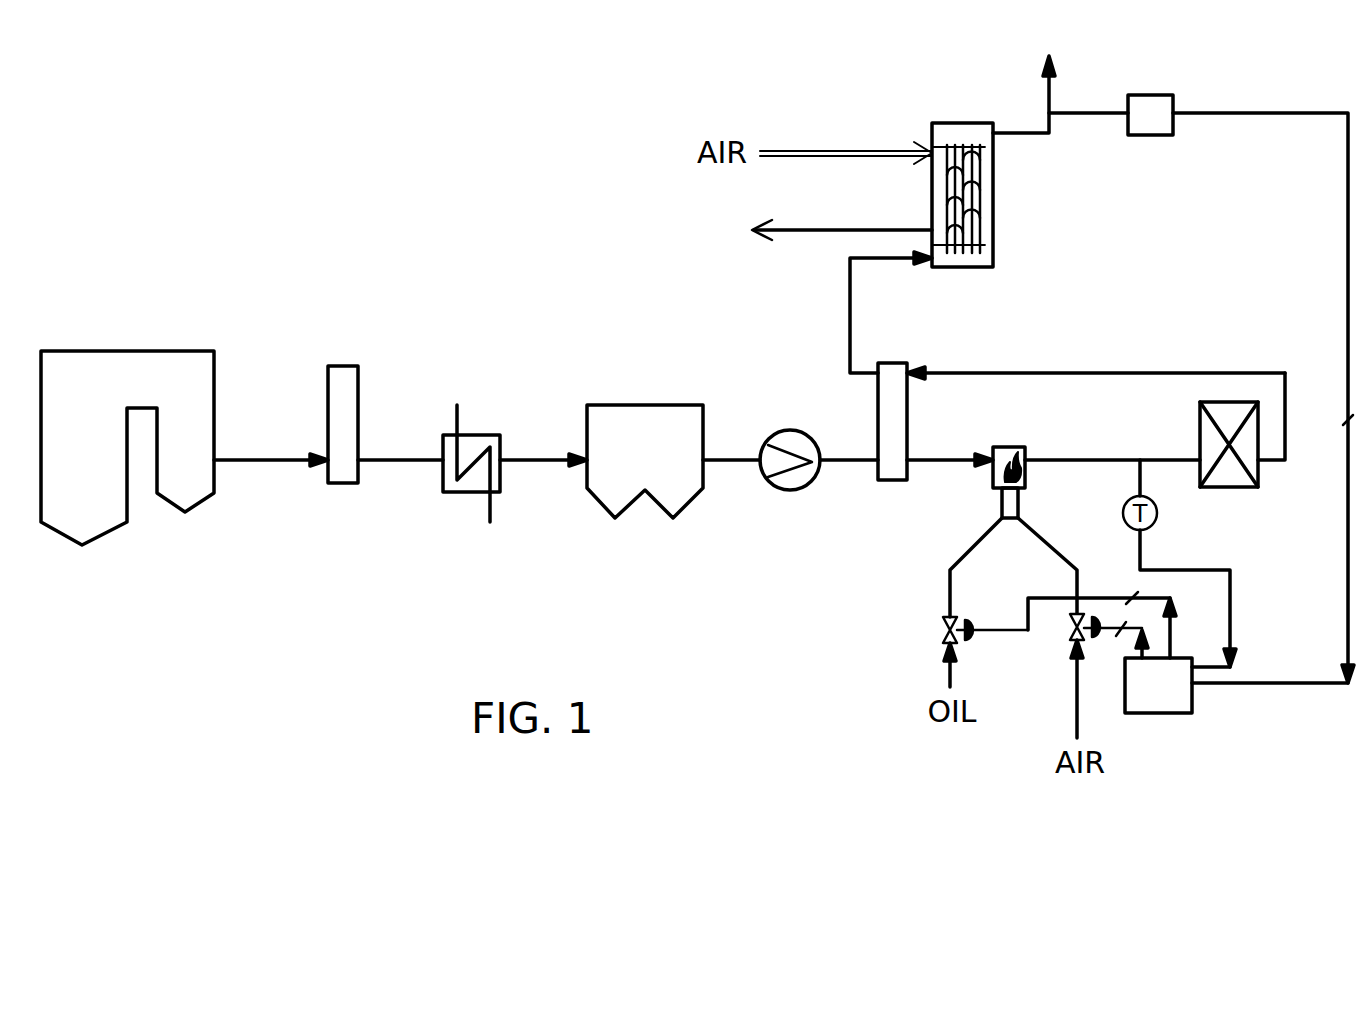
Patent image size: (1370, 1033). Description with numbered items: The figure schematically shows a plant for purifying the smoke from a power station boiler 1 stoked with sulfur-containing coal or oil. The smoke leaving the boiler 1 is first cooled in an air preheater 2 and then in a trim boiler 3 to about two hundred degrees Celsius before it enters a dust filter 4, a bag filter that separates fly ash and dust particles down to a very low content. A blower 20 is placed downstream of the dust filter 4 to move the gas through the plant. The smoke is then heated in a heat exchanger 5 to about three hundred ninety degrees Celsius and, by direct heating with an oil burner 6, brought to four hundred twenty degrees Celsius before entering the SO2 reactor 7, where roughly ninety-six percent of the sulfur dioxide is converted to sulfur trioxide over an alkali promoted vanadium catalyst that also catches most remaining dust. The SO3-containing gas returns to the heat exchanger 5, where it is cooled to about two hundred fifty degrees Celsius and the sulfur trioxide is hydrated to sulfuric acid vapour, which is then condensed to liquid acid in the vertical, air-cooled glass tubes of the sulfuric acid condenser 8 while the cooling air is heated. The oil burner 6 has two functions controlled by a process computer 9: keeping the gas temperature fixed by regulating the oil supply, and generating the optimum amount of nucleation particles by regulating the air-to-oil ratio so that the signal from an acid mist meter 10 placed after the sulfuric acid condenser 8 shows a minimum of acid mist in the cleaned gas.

The boiler 1 is at (168, 502).
The air preheater 2 is at (345, 485).
The trim boiler 3 is at (470, 493).
The dust filter 4 is at (655, 498).
The blower 20 is at (775, 490).
The heat exchanger 5 is at (885, 482).
The oil burner 6 is at (1002, 503).
The SO2 reactor 7 is at (1213, 488).
The sulfuric acid condenser 8 is at (993, 215).
The process computer 9 is at (1177, 714).
The acid mist meter 10 is at (1163, 93).